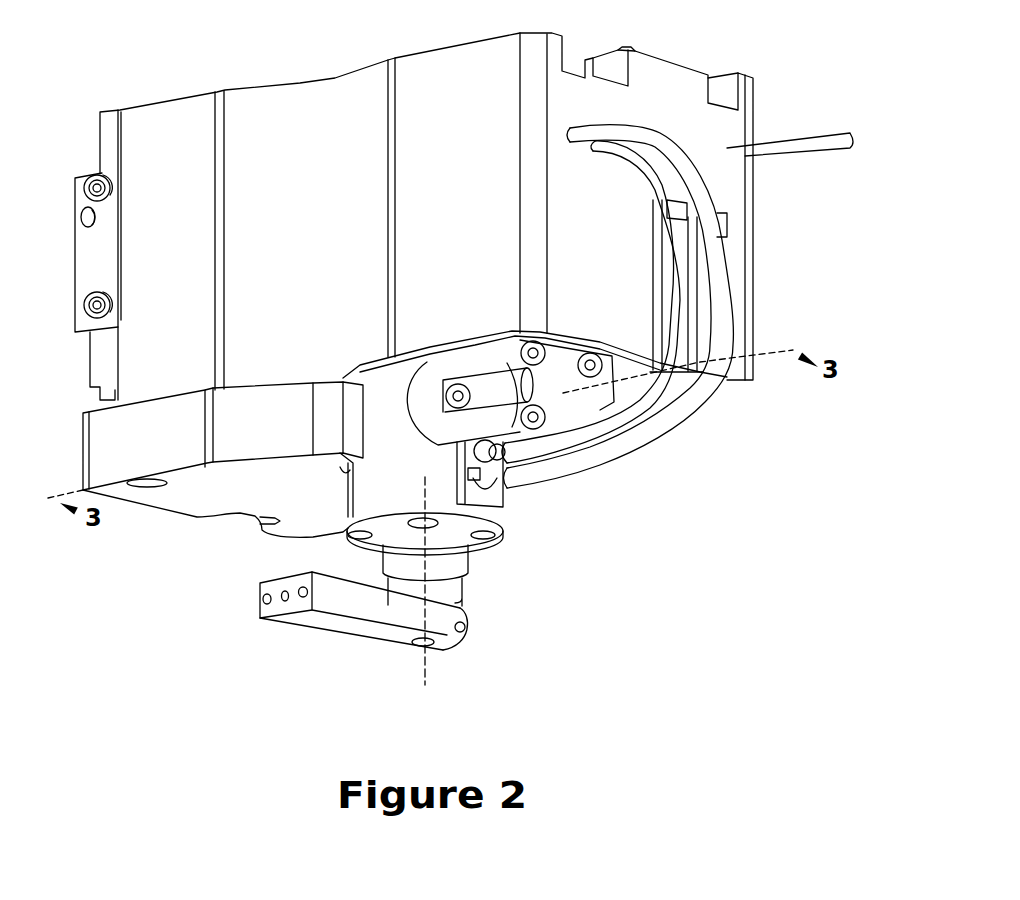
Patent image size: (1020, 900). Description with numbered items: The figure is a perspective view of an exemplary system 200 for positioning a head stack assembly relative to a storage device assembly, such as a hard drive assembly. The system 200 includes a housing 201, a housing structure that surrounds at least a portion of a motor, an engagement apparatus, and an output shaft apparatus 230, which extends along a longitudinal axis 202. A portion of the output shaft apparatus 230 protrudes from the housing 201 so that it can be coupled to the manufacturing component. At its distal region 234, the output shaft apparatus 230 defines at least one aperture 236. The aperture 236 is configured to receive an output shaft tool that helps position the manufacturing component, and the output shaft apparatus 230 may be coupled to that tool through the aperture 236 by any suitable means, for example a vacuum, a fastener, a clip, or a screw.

The system 200 is at (645, 621).
The housing 201 is at (310, 95).
The longitudinal axis 202 is at (427, 668).
The output shaft apparatus 230 is at (327, 653).
The distal region 234 is at (322, 633).
The aperture 236 is at (262, 592).